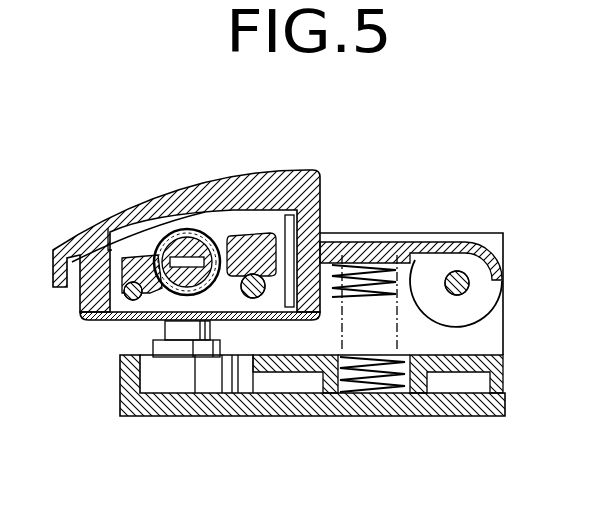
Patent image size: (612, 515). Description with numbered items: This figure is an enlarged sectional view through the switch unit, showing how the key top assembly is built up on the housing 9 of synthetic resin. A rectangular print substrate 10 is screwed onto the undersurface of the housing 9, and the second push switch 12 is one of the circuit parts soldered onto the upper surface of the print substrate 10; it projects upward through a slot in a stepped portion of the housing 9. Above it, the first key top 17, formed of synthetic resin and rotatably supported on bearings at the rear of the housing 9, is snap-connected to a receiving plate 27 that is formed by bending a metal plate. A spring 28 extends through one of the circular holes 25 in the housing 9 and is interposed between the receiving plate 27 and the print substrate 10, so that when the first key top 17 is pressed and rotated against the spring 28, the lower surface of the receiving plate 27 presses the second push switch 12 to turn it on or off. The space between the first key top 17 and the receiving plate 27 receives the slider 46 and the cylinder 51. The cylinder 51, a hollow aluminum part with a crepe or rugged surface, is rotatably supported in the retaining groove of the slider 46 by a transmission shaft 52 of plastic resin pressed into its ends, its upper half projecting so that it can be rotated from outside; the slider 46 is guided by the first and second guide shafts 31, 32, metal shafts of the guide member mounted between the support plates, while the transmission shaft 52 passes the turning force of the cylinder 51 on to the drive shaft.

The housing 9 is at (483, 353).
The print substrate 10 is at (480, 407).
The second push switch 12 is at (190, 390).
The first key top 17 is at (118, 217).
The circular hole 25 is at (363, 387).
The receiving plate 27 is at (117, 327).
The spring 28 is at (372, 250).
The first guide shaft 31 is at (301, 213).
The second guide shaft 32 is at (98, 320).
The slider 46 is at (247, 243).
The cylinder 51 is at (110, 235).
The transmission shaft 52 is at (183, 240).